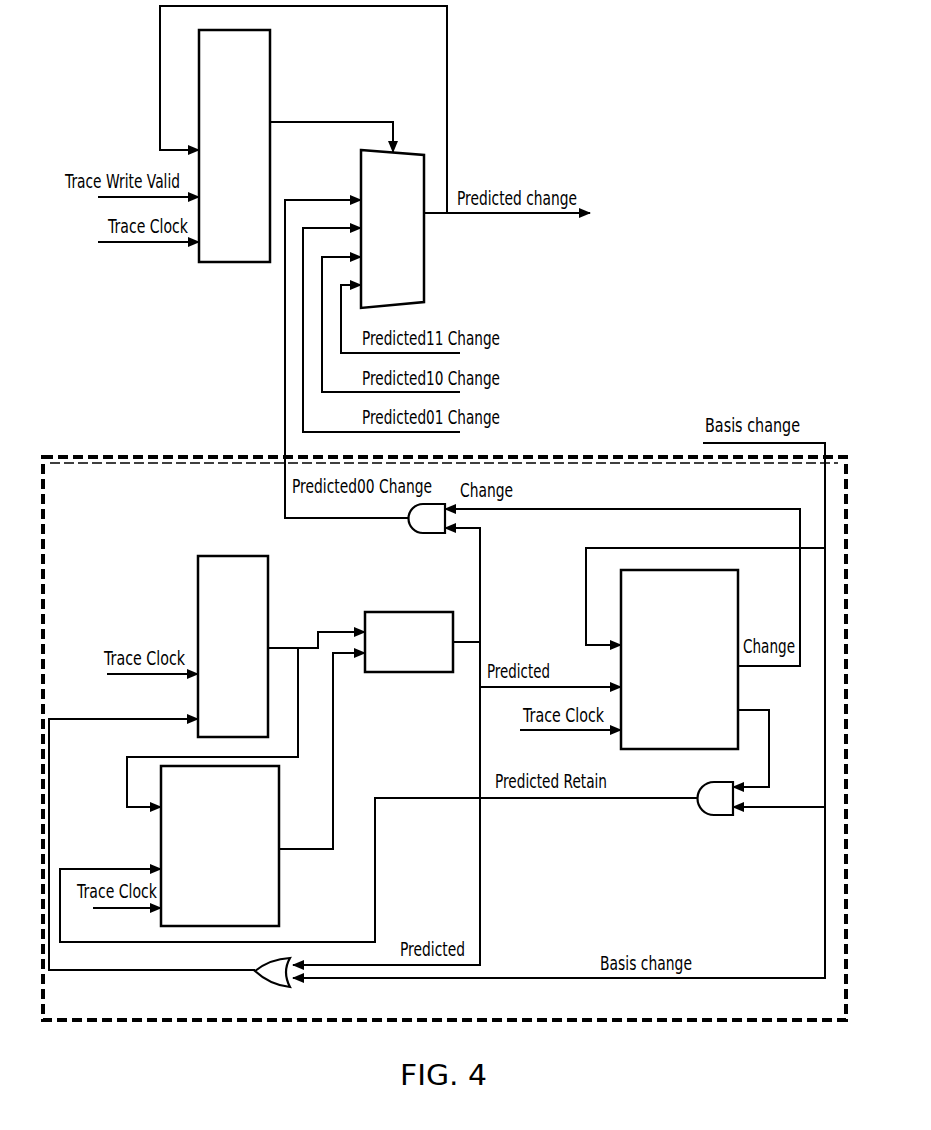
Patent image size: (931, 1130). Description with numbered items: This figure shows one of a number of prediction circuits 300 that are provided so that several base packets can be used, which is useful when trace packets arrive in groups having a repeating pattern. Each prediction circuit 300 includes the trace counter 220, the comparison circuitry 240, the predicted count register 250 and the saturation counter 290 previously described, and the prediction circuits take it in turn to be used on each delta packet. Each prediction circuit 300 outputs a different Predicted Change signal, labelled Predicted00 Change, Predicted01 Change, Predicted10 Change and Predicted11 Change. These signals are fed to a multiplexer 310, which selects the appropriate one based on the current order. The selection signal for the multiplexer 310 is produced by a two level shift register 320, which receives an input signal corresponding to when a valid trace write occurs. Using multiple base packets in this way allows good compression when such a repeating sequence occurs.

The two level shift register 320 is at (199, 92).
The multiplexer 310 is at (428, 238).
The prediction circuit 300 is at (130, 455).
The trace counter 220 is at (271, 583).
The comparison circuitry 240 is at (407, 675).
The predicted count register 250 is at (282, 885).
The saturation counter 290 is at (740, 675).